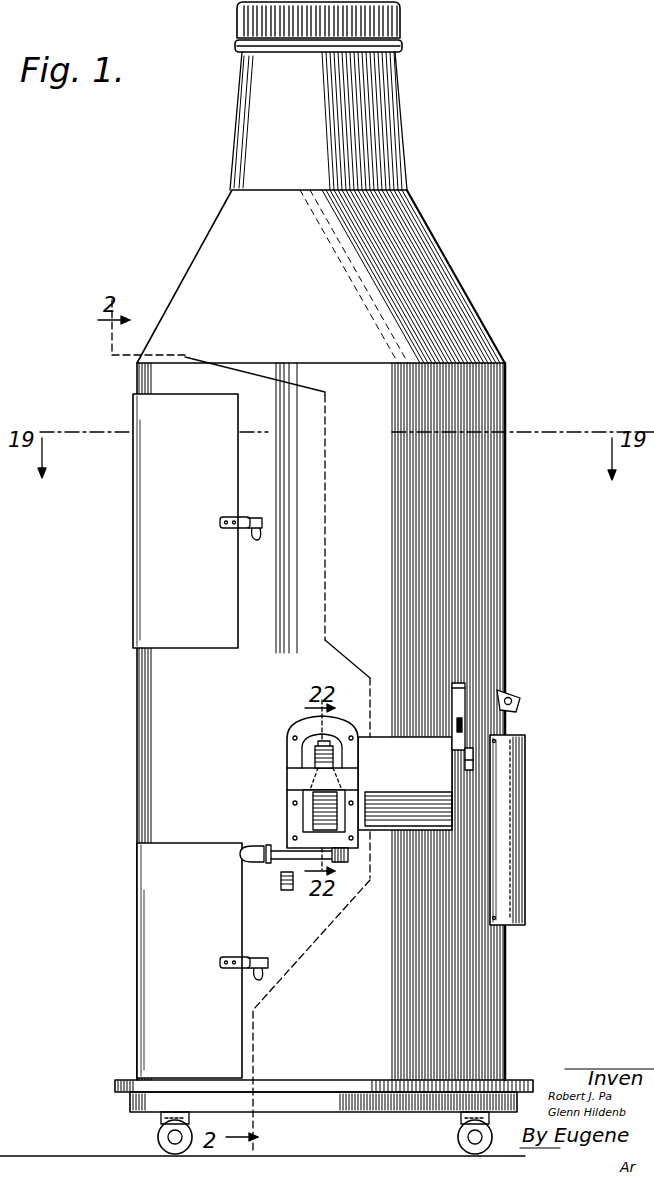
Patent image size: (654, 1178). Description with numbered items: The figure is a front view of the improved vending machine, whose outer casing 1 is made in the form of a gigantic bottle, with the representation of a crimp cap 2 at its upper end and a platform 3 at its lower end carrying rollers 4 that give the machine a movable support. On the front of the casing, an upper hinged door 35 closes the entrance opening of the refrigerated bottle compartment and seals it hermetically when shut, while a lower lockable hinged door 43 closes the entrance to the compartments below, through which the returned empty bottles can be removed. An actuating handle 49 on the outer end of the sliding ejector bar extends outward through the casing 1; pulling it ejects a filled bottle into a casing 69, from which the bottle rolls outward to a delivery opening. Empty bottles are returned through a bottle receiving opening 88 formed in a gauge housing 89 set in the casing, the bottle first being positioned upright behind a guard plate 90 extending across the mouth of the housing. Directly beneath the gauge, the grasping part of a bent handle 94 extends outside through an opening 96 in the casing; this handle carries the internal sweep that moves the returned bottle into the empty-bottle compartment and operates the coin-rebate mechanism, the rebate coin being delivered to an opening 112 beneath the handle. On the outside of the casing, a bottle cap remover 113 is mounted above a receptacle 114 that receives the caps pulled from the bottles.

The outer casing 1 is at (137, 740).
The crimp cap 2 is at (394, 24).
The platform 3 is at (350, 1096).
The rollers 4 is at (158, 1134).
The hinged door 35 is at (152, 592).
The hinged door 43 is at (155, 1003).
The actuating handle 49 is at (473, 760).
The casing 69 is at (535, 641).
The bottle receiving opening 88 is at (316, 757).
The gauge housing 89 is at (290, 771).
The guard plate 90 is at (296, 792).
The bent handle 94 is at (282, 848).
The opening 96 is at (342, 862).
The opening 112 is at (284, 892).
The bottle cap remover 113 is at (518, 703).
The receptacle 114 is at (512, 803).